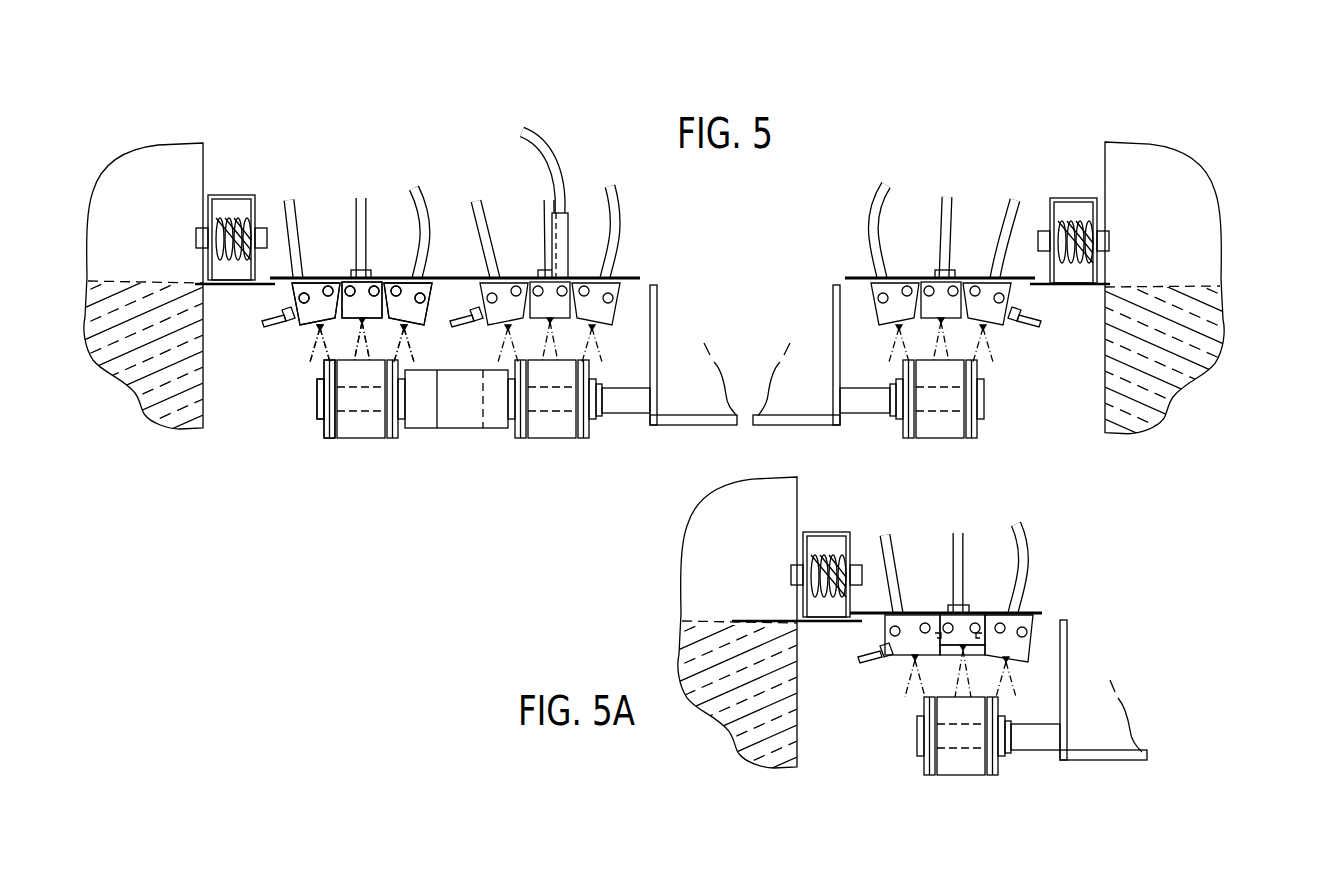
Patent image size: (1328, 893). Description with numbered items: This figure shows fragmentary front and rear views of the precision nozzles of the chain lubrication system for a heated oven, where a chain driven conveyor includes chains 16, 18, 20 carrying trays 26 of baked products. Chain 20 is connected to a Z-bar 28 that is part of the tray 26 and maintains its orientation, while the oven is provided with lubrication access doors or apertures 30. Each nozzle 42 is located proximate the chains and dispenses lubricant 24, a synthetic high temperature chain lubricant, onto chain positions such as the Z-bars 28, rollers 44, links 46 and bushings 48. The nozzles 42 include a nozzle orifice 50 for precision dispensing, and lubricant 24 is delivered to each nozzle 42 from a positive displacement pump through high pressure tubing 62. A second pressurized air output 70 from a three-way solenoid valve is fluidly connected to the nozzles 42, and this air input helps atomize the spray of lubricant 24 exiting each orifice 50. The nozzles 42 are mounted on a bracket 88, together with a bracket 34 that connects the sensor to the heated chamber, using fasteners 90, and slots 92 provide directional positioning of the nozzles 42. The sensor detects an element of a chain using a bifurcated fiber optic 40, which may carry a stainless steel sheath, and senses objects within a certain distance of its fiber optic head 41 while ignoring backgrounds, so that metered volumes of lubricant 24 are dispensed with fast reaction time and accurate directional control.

In FIG. 5, the chain 16 is at (545, 438).
In FIG. 5, the chain 18 is at (943, 438).
In FIG. 5A, the chain 18 is at (952, 758).
In FIG. 5, the chain 20 is at (332, 374).
In FIG. 5, the lubricant 24 is at (403, 350).
In FIG. 5A, the lubricant 24 is at (910, 688).
In FIG. 5, the tray 26 is at (668, 430).
In FIG. 5A, the tray 26 is at (1085, 765).
In FIG. 5, the Z-bar 28 is at (860, 413).
In FIG. 5A, the Z-bar 28 is at (1025, 752).
In FIG. 5, the lubrication access door 30 is at (133, 188).
In FIG. 5A, the lubrication access door 30 is at (710, 566).
In FIG. 5, the bracket 34 is at (243, 195).
In FIG. 5, the bifurcated fiber optic 40 is at (536, 126).
In FIG. 5, the fiber optic head 41 is at (583, 200).
In FIG. 5, the nozzle 42 is at (312, 312).
In FIG. 5A, the nozzle 42 is at (963, 610).
In FIG. 5, the roller 44 is at (362, 438).
In FIG. 5, the link 46 is at (326, 432).
In FIG. 5, the bushing 48 is at (337, 438).
In FIG. 5, the nozzle orifice 50 is at (590, 322).
In FIG. 5, the high pressure tubing 62 is at (426, 192).
In FIG. 5A, the high pressure tubing 62 is at (1018, 545).
In FIG. 5, the second pressurized air output 70 is at (262, 320).
In FIG. 5A, the second pressurized air output 70 is at (882, 652).
In FIG. 5, the bracket 88 is at (1050, 198).
In FIG. 5A, the bracket 88 is at (823, 625).
In FIG. 5A, the fastener 90 is at (928, 602).
In FIG. 5A, the slot 92 is at (1030, 656).